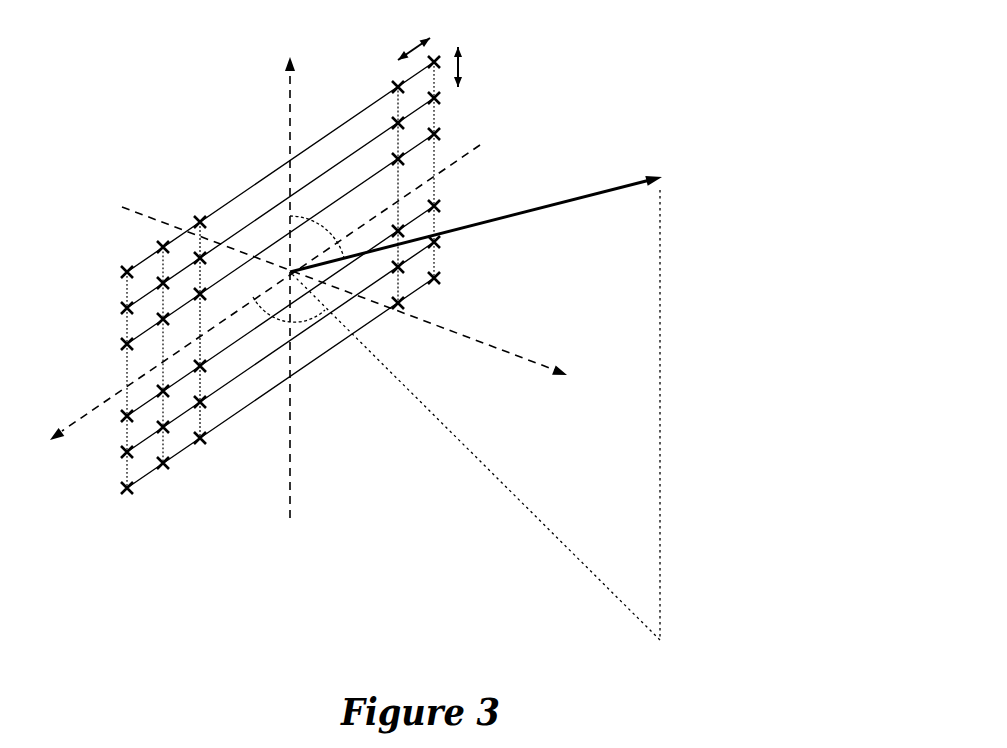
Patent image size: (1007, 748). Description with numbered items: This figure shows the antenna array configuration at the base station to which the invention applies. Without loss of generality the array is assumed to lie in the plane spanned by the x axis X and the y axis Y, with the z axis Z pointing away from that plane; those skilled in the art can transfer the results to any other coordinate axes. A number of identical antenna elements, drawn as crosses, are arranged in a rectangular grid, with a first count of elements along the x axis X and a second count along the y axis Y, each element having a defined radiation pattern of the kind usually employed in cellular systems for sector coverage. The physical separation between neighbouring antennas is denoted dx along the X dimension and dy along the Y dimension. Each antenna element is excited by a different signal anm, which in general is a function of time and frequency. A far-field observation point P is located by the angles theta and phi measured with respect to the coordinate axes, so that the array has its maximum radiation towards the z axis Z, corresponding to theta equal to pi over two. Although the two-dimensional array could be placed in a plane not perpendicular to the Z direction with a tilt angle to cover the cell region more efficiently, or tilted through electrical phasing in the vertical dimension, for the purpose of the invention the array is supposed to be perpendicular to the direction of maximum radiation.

The excitation signal anm is at (259, 275).
The antenna separation along the X dimension dx is at (409, 33).
The antenna separation along the Y dimension dy is at (473, 66).
The x axis X is at (265, 292).
The y axis Y is at (274, 287).
The z axis Z is at (346, 291).
The observation point P is at (529, 399).
The elevation angle theta is at (317, 233).
The azimuth angle phi is at (289, 319).